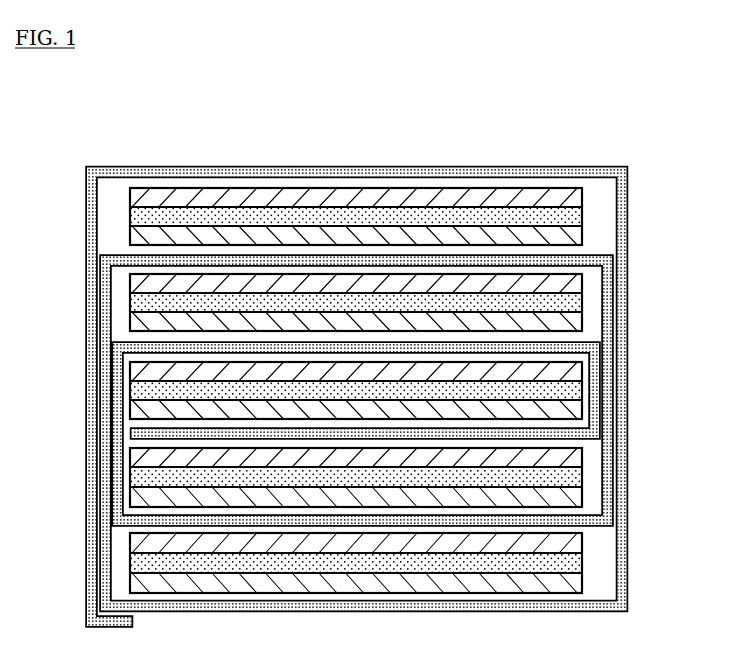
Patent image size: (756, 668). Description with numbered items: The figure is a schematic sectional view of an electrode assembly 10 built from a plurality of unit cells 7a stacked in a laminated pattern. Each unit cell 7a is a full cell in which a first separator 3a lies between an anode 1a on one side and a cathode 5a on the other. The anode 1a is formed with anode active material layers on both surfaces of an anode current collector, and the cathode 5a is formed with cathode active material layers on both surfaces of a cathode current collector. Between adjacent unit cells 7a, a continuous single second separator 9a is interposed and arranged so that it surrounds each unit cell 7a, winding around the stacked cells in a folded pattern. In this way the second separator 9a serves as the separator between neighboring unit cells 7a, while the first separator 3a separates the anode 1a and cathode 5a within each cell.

The electrode assembly 10 is at (657, 138).
The second separator 9a is at (87, 316).
The unit cell 7a is at (420, 390).
The anode 1a is at (396, 370).
The first separator 3a is at (396, 389).
The cathode 5a is at (396, 409).